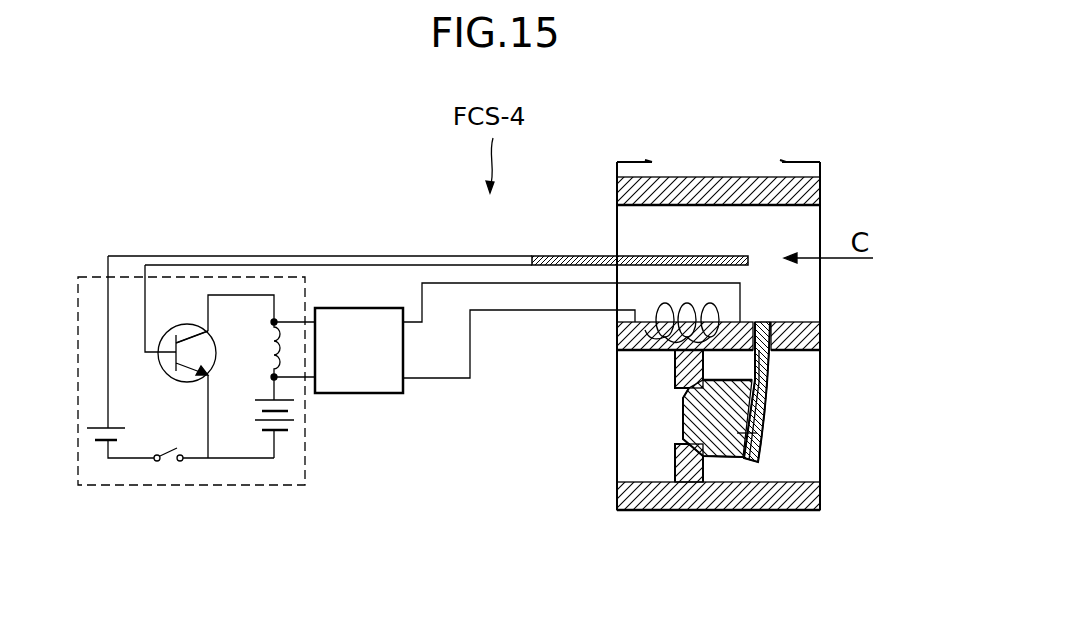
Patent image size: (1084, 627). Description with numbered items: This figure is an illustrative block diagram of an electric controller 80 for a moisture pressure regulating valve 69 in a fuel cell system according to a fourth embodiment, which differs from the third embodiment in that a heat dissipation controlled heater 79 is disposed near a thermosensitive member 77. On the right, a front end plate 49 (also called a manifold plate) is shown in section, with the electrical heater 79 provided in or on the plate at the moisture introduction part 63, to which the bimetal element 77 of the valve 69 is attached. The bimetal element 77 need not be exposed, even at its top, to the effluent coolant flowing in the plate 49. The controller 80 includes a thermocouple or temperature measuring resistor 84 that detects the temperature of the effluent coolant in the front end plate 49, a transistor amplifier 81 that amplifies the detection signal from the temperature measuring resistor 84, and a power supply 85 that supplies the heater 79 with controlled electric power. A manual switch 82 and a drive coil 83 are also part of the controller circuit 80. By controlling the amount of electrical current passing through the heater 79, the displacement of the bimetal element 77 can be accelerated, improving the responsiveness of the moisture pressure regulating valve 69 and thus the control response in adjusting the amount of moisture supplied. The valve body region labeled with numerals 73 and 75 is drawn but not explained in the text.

The front end plate 49 is at (836, 297).
The moisture introduction part 63 is at (723, 512).
The moisture pressure regulating valve 69 is at (684, 417).
The guide member 73 is at (681, 393).
The contact portion 75 is at (765, 440).
The thermosensitive member 77 is at (772, 400).
The heater 79 is at (617, 350).
The electric controller 80 is at (227, 394).
The transistor amplifier 81 is at (176, 382).
The manual switch 82 is at (169, 464).
The drive coil 83 is at (267, 345).
The temperature measuring resistor 84 is at (700, 256).
The power supply 85 is at (372, 393).